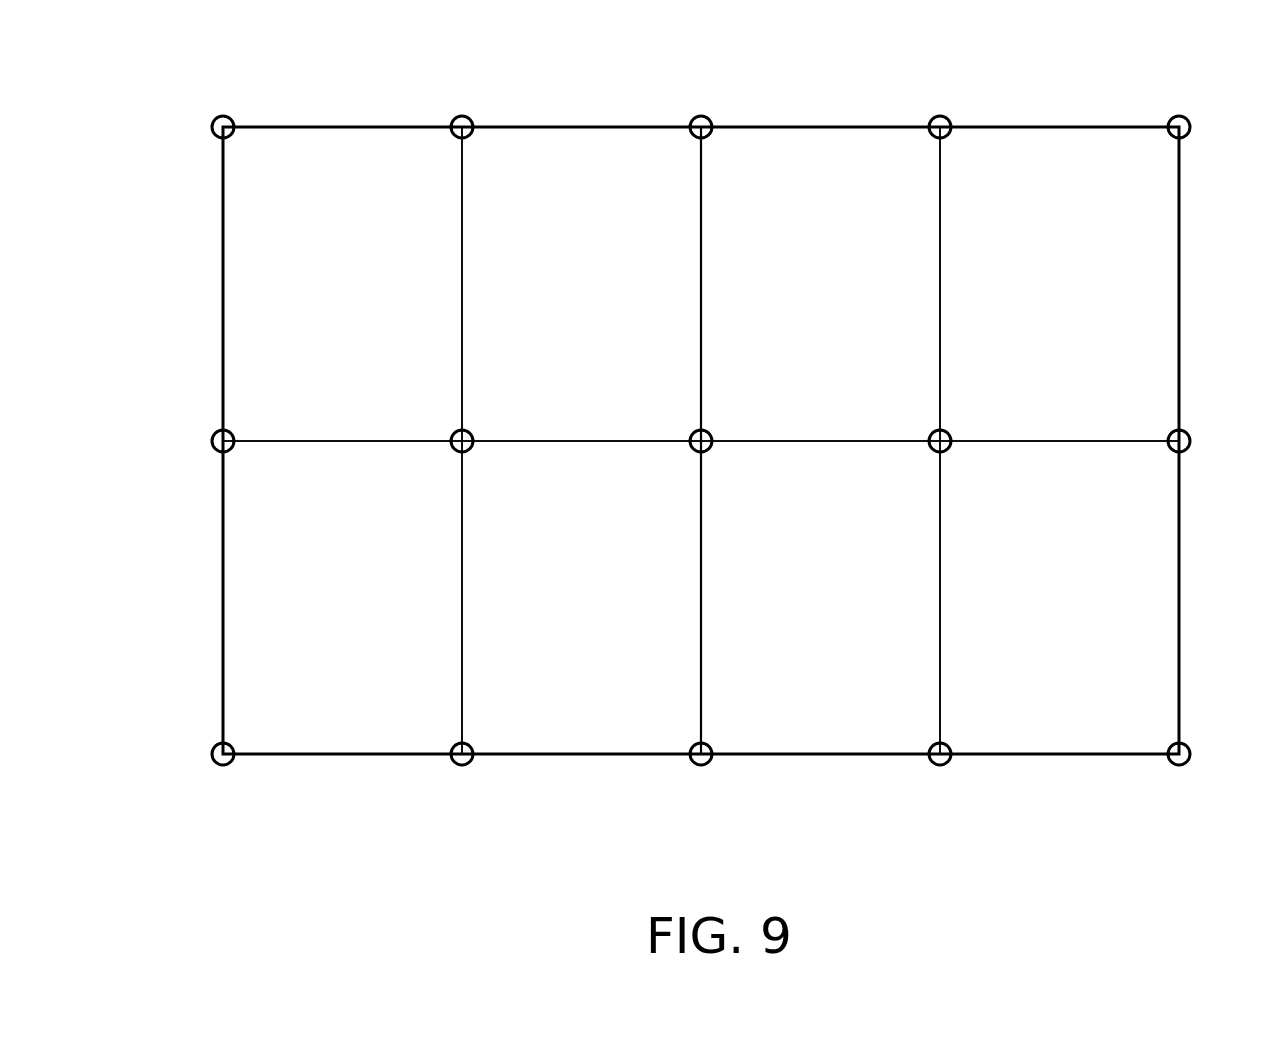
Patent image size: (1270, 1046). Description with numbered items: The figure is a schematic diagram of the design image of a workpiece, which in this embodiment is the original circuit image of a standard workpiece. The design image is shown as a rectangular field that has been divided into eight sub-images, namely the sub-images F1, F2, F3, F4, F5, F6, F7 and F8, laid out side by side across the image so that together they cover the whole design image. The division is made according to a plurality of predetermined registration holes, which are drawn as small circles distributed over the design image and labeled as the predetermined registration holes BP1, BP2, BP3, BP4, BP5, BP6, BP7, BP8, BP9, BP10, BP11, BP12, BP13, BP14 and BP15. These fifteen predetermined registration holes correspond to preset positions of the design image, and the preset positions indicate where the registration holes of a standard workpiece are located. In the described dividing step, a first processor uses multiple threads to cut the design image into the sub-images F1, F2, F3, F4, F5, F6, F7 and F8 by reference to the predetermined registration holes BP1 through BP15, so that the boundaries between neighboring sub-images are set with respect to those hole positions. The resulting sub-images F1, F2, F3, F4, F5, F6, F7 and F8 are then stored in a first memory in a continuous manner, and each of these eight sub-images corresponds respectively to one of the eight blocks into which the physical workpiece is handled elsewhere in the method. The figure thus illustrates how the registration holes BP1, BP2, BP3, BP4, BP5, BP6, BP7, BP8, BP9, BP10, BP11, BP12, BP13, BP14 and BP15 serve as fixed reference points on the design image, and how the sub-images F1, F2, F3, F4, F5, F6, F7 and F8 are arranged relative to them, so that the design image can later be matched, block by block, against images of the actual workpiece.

The predetermined registration hole BP1 is at (215, 120).
The predetermined registration hole BP2 is at (454, 120).
The predetermined registration hole BP3 is at (693, 120).
The predetermined registration hole BP4 is at (932, 120).
The predetermined registration hole BP5 is at (1187, 120).
The predetermined registration hole BP6 is at (215, 450).
The predetermined registration hole BP7 is at (454, 450).
The predetermined registration hole BP8 is at (693, 450).
The predetermined registration hole BP9 is at (932, 450).
The predetermined registration hole BP10 is at (1187, 450).
The predetermined registration hole BP11 is at (215, 763).
The predetermined registration hole BP12 is at (454, 763).
The predetermined registration hole BP13 is at (693, 765).
The predetermined registration hole BP14 is at (932, 763).
The predetermined registration hole BP15 is at (1187, 763).
The sub-image F1 is at (362, 280).
The sub-image F2 is at (589, 287).
The sub-image F3 is at (808, 287).
The sub-image F4 is at (1077, 290).
The sub-image F5 is at (320, 622).
The sub-image F6 is at (578, 620).
The sub-image F7 is at (808, 618).
The sub-image F8 is at (1065, 602).